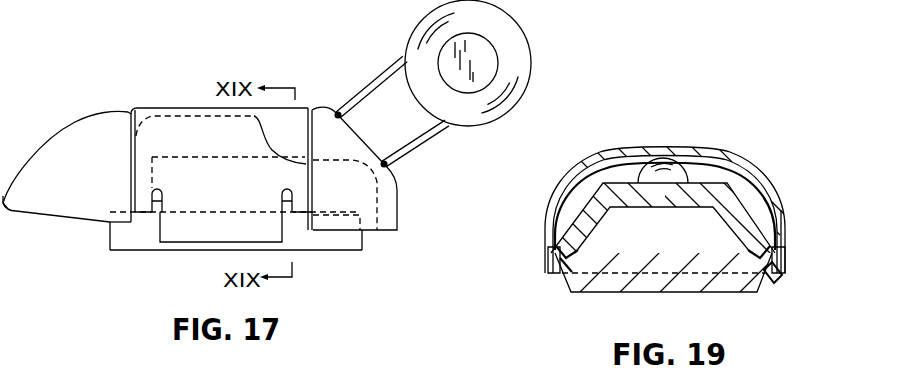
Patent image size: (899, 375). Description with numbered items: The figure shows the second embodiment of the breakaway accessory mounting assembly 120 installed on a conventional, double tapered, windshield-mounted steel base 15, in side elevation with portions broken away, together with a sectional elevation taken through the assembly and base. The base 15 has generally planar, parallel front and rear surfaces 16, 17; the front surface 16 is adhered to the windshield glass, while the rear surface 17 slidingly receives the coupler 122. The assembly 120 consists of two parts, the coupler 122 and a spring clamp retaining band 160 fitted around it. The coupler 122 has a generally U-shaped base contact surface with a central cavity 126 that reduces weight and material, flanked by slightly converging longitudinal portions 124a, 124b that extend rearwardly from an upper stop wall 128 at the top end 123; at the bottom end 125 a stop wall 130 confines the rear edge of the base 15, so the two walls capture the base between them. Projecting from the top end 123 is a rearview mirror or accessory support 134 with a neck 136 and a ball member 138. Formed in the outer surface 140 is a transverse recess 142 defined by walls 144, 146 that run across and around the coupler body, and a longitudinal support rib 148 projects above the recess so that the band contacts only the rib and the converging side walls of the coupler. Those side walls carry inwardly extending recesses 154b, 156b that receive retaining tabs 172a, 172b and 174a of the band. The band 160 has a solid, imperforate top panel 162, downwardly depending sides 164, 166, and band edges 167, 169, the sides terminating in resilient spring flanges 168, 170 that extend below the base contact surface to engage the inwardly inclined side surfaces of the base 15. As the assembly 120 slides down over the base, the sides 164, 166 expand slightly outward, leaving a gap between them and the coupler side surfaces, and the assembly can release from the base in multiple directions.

In FIG. 17, the base 15 is at (345, 258).
In FIG. 19, the base 15 is at (580, 300).
In FIG. 19, the front surface 16 is at (716, 294).
In FIG. 19, the rear surface 17 is at (676, 242).
In FIG. 17, the breakaway accessory mounting assembly 120 is at (194, 66).
In FIG. 17, the coupler 122 is at (58, 130).
In FIG. 19, the coupler 122 is at (577, 192).
In FIG. 17, the top end 123 is at (398, 196).
In FIG. 17, the longitudinal portion 124a is at (292, 214).
In FIG. 19, the longitudinal portion 124a is at (602, 217).
In FIG. 19, the longitudinal portion 124b is at (722, 217).
In FIG. 17, the bottom end 125 is at (4, 205).
In FIG. 17, the central cavity 126 is at (201, 160).
In FIG. 17, the upper stop wall 128 is at (398, 217).
In FIG. 17, the stop wall 130 is at (99, 220).
In FIG. 17, the accessory support 134 is at (403, 31).
In FIG. 17, the neck 136 is at (409, 142).
In FIG. 17, the ball member 138 is at (530, 63).
In FIG. 17, the outer surface 140 is at (94, 204).
In FIG. 17, the transverse recess 142 is at (162, 126).
In FIG. 19, the transverse recess 142 is at (752, 195).
In FIG. 17, the wall 144 is at (314, 108).
In FIG. 17, the wall 146 is at (135, 108).
In FIG. 19, the wall 146 is at (742, 172).
In FIG. 19, the spring clamp retaining band support rib 148 is at (690, 162).
In FIG. 19, the recess 154b is at (549, 253).
In FIG. 19, the recess 156b is at (778, 252).
In FIG. 17, the spring clamp retaining band 160 is at (226, 148).
In FIG. 19, the spring clamp retaining band 160 is at (648, 136).
In FIG. 17, the top panel 162 is at (186, 108).
In FIG. 19, the top panel 162 is at (677, 154).
In FIG. 19, the side 164 is at (546, 200).
In FIG. 19, the side 166 is at (781, 212).
In FIG. 17, the band edge 167 is at (314, 110).
In FIG. 17, the spring flange 168 is at (197, 238).
In FIG. 19, the spring flange 168 is at (560, 276).
In FIG. 17, the band edge 169 is at (131, 144).
In FIG. 19, the spring flange 170 is at (775, 280).
In FIG. 17, the retaining tab 172a is at (297, 214).
In FIG. 19, the retaining tab 172a is at (549, 241).
In FIG. 17, the retaining tab 172b is at (148, 205).
In FIG. 19, the retaining tab 174a is at (778, 236).